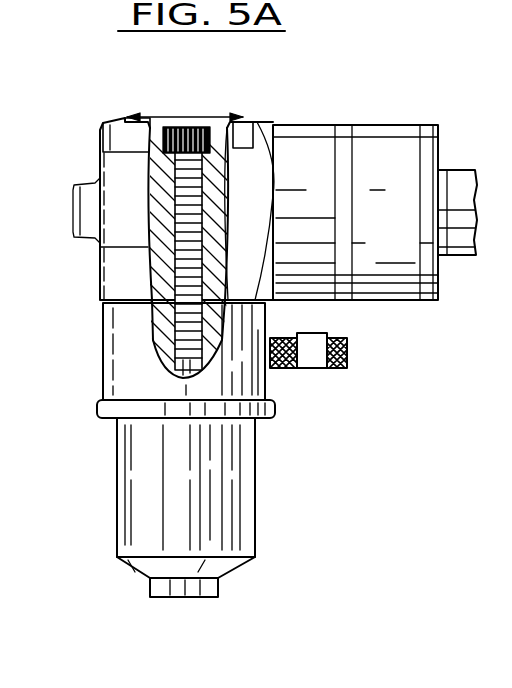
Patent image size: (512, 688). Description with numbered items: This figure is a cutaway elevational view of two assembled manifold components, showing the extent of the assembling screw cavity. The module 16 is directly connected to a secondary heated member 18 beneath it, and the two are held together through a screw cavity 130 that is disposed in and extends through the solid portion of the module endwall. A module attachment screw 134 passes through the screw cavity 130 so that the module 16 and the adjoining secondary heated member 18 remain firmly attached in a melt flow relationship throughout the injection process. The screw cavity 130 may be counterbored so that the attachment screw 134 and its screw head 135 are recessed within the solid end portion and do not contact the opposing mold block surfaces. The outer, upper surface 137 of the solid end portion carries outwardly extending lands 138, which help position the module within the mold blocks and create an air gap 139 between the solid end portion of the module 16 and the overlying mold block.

The module 16 is at (310, 133).
The secondary heated member 18 is at (132, 390).
The screw cavity 130 is at (175, 173).
The module attachment screw 134 is at (180, 237).
The screw head 135 is at (185, 116).
The outer upper surface 137 is at (97, 132).
The land 138 is at (120, 120).
The air gap 139 is at (153, 118).